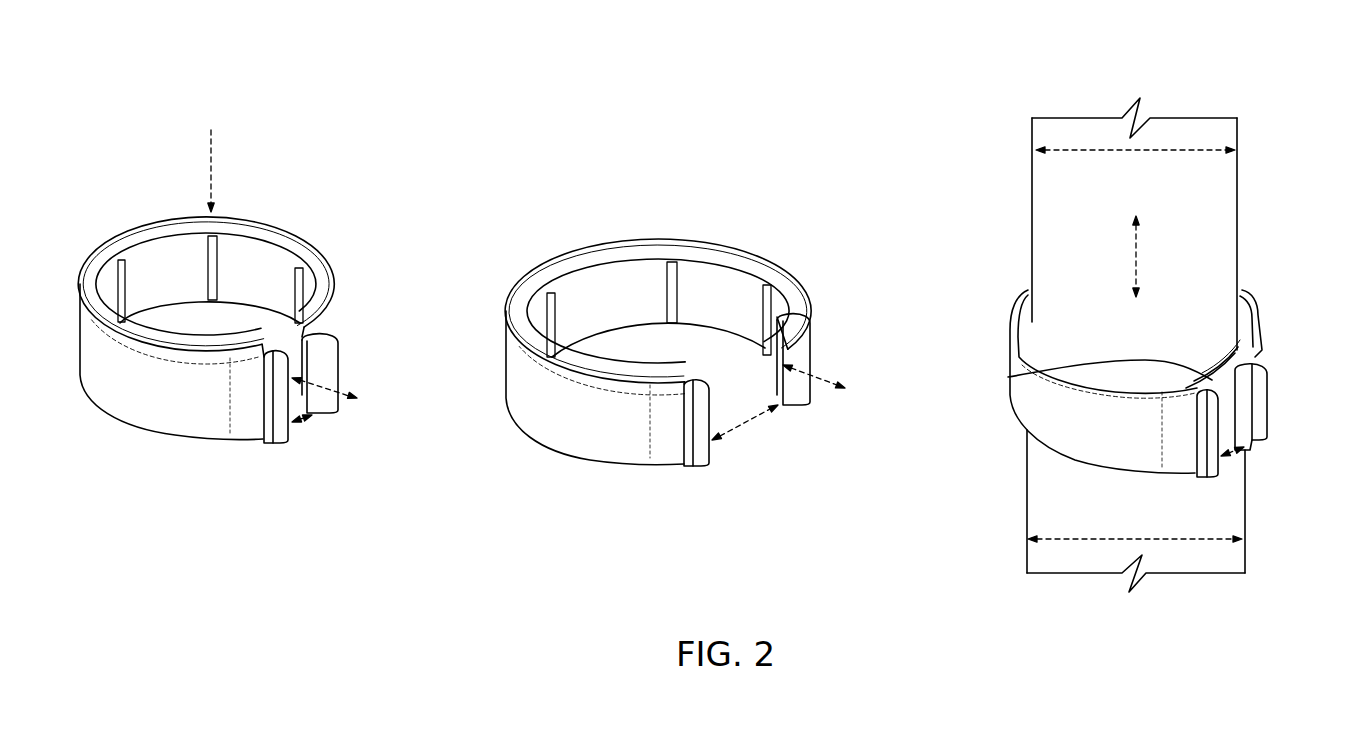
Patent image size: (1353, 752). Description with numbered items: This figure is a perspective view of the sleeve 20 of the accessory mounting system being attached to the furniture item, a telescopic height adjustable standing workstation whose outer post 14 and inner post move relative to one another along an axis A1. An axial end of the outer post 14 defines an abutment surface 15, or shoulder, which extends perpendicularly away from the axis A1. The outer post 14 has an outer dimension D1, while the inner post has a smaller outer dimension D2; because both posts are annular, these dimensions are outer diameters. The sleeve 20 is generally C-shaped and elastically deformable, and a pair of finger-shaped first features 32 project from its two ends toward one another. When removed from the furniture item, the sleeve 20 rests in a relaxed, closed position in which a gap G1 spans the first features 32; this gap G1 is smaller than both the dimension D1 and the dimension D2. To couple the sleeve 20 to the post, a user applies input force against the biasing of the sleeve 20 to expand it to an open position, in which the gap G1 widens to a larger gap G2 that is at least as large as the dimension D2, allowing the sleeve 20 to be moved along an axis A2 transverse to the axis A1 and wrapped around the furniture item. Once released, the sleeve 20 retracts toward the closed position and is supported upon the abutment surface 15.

The sleeve 20 is at (150, 230).
The first features 32 is at (320, 360).
The outer post 14 is at (1044, 490).
The abutment surface 15 is at (1008, 377).
The axis A1 is at (1131, 251).
The axis A2 is at (333, 400).
The outer dimension D1 is at (1068, 541).
The outer dimension D2 is at (1073, 148).
The gap G1 is at (292, 424).
The gap G2 is at (745, 427).